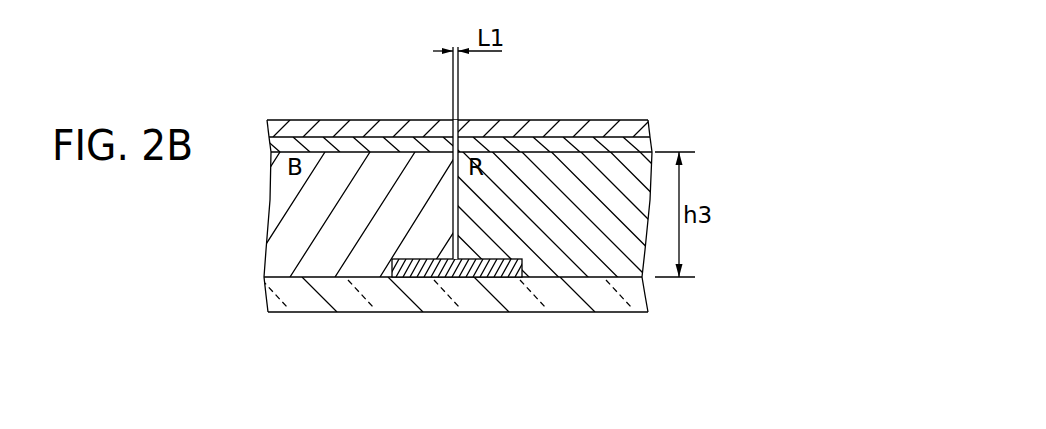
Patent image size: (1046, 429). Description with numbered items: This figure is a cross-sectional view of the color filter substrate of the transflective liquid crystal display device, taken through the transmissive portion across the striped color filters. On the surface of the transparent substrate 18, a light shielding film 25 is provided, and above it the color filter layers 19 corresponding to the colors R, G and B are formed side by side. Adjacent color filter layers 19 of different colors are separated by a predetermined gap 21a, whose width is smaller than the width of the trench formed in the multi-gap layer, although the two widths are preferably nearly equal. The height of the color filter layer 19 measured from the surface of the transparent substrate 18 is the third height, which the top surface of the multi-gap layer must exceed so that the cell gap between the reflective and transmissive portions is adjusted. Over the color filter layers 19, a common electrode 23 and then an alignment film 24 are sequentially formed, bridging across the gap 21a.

The transparent substrate 18 is at (632, 292).
The color filter layer 19 is at (278, 227).
The gap 21a is at (451, 157).
The common electrode 23 is at (638, 147).
The alignment film 24 is at (638, 128).
The light shielding film 25 is at (463, 273).